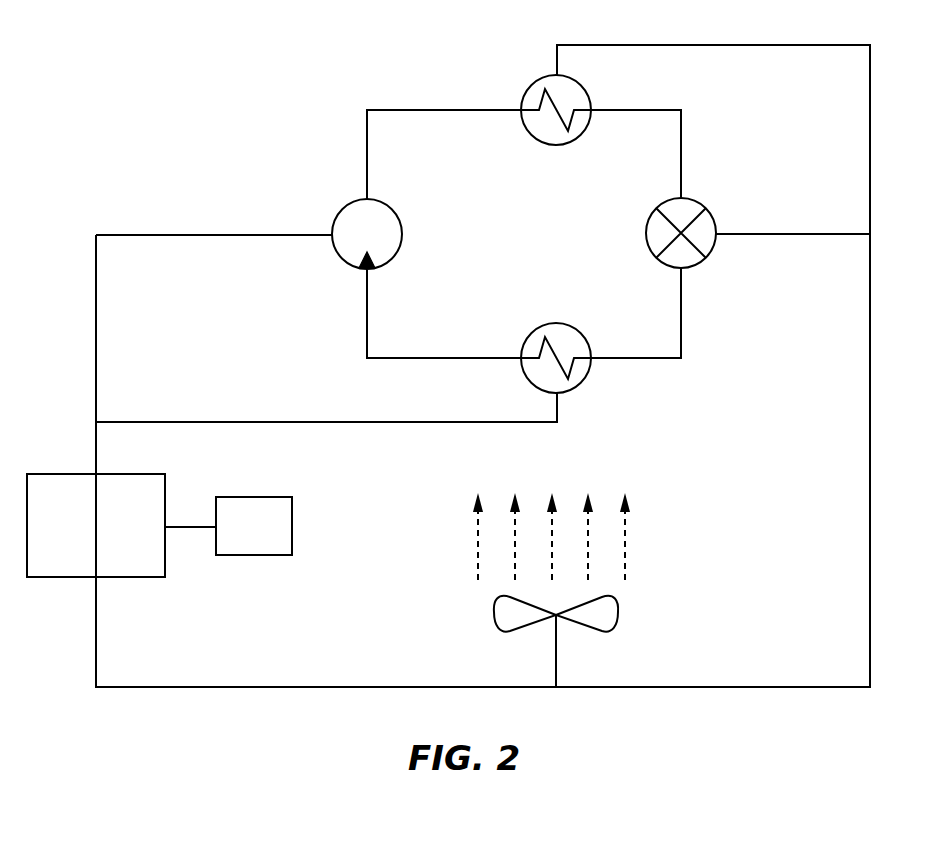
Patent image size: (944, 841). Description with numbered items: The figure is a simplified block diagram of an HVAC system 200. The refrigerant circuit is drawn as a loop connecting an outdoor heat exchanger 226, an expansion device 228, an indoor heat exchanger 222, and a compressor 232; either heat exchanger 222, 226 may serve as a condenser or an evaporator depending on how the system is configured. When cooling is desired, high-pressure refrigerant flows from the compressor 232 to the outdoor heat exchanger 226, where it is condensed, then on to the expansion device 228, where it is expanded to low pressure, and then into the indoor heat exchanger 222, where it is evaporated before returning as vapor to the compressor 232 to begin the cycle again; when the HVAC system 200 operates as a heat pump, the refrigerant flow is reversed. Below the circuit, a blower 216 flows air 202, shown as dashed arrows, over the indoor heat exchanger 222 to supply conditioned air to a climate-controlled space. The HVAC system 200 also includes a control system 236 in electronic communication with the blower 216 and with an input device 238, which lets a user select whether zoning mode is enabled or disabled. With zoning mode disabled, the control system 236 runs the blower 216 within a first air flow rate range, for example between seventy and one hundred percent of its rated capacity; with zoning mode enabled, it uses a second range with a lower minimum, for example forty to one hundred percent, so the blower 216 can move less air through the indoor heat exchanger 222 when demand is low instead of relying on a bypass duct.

The HVAC system 200 is at (198, 80).
The air 202 is at (642, 529).
The blower 216 is at (493, 615).
The indoor heat exchanger 222 is at (569, 324).
The outdoor heat exchanger 226 is at (540, 78).
The expansion device 228 is at (697, 205).
The compressor 232 is at (380, 200).
The control system 236 is at (77, 539).
The input device 238 is at (233, 539).